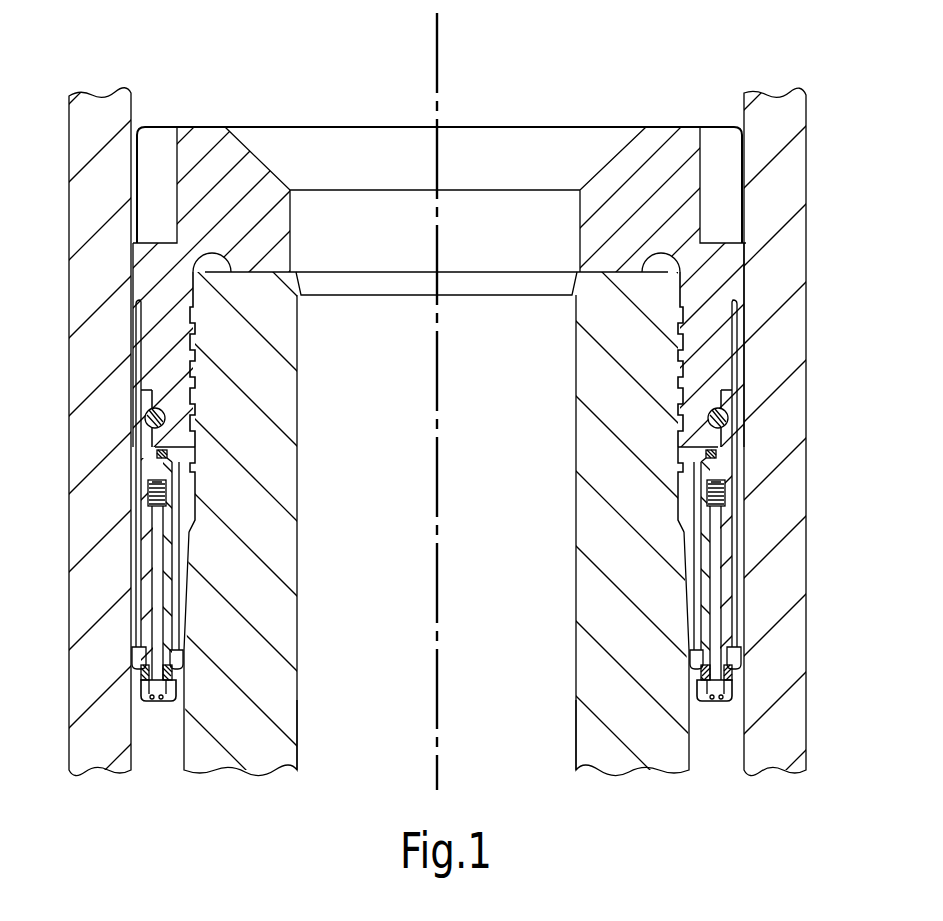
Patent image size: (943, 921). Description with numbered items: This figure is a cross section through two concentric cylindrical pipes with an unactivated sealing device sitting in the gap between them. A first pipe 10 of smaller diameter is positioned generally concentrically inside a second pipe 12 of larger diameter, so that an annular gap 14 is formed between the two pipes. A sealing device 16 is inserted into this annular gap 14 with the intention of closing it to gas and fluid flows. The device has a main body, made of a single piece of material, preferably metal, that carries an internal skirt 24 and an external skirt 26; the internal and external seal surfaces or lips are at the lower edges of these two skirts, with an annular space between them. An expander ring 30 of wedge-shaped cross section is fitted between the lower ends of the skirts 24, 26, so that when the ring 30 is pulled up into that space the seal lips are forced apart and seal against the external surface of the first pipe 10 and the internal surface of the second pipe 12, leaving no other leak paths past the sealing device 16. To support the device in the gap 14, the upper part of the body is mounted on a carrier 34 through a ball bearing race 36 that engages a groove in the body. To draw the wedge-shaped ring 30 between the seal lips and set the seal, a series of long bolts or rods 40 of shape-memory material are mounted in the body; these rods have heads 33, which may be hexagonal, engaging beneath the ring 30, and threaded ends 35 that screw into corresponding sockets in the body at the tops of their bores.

The first pipe 10 is at (255, 591).
The second pipe 12 is at (96, 494).
The annular gap 14 is at (166, 740).
The sealing device 16 is at (179, 483).
The internal skirt 24 is at (168, 600).
The external skirt 26 is at (140, 617).
The expander ring 30 is at (173, 684).
The heads 33 is at (157, 702).
The carrier 34 is at (203, 167).
The threaded ends 35 is at (148, 493).
The ball bearing race 36 is at (145, 419).
The bolts or rods 40 is at (157, 536).